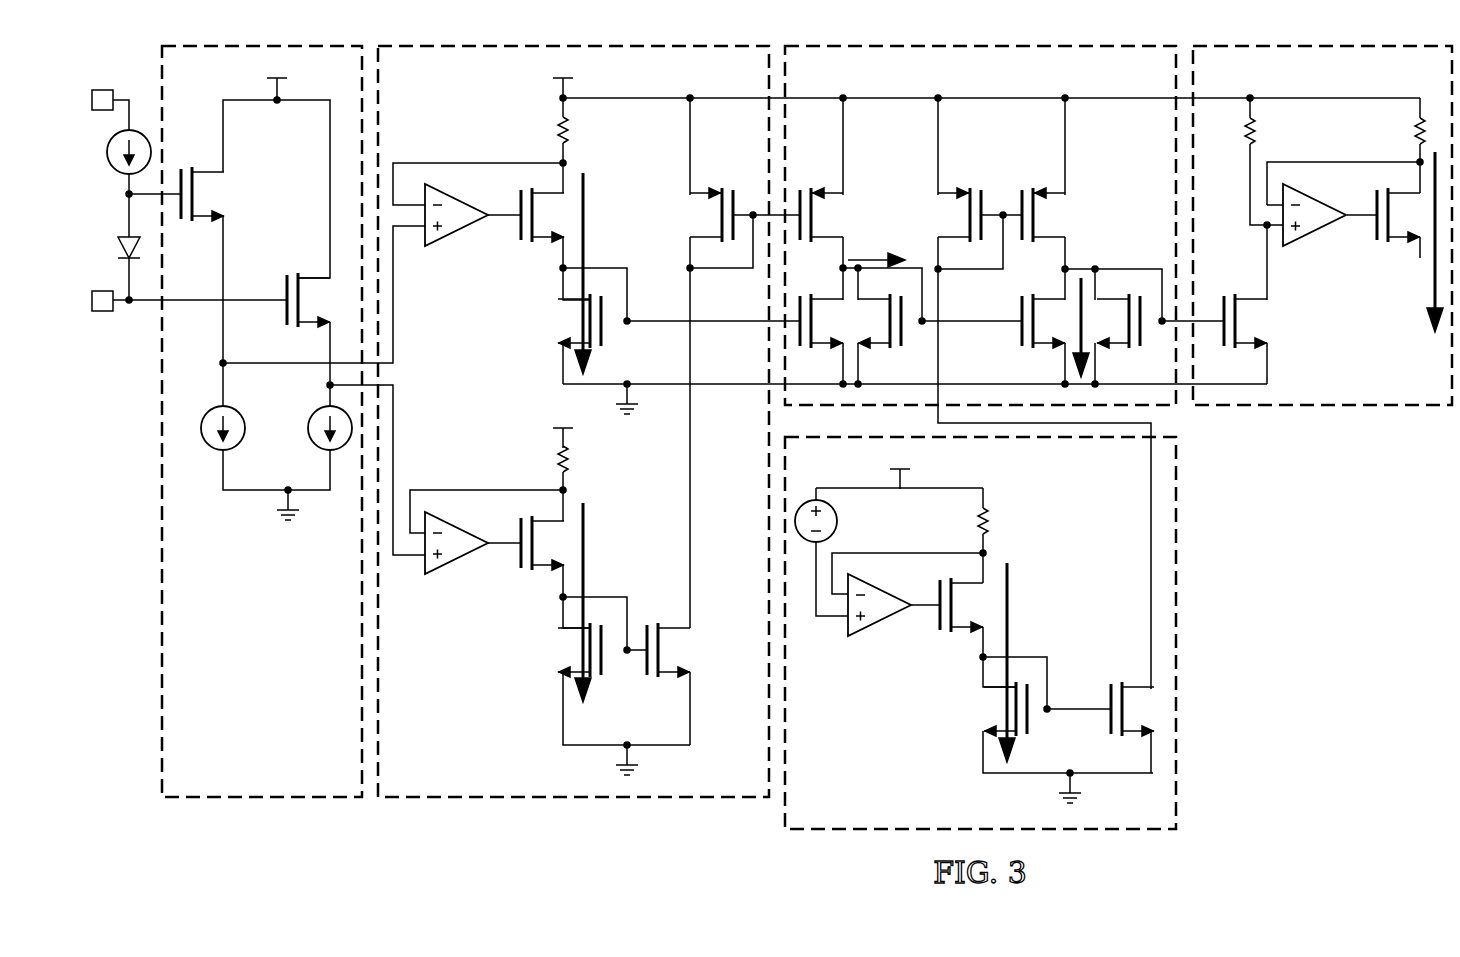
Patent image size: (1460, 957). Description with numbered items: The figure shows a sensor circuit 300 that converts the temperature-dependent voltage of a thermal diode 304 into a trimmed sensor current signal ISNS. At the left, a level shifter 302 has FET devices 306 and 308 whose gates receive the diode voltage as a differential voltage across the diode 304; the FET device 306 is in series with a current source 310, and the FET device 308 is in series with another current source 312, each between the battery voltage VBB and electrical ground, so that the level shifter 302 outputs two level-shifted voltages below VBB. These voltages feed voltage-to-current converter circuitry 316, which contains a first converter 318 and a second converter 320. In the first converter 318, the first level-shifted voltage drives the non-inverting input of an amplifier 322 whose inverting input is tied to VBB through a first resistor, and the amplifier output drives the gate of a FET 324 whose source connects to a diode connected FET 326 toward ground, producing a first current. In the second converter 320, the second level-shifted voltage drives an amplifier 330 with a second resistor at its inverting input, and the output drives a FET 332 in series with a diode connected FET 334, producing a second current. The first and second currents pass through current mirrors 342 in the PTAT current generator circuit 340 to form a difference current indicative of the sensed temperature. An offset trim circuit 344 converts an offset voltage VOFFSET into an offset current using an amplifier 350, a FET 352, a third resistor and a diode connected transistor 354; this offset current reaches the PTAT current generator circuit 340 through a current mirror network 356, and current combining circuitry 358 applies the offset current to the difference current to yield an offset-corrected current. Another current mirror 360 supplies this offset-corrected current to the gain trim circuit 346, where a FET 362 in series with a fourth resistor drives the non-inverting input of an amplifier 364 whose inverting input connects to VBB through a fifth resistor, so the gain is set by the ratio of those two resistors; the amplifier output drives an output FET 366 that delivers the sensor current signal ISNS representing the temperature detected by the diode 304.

The sensor circuit 300 is at (1287, 756).
The level shifter 302 is at (245, 801).
The thermal diode 304 is at (125, 234).
The FET device 306 is at (181, 169).
The FET device 308 is at (284, 274).
The current source 310 is at (243, 442).
The current source 312 is at (311, 418).
The voltage-to-current converter circuitry 316 is at (533, 801).
The first converter 318 is at (444, 130).
The second converter 320 is at (444, 462).
The amplifier 322 is at (458, 236).
The FET 324 is at (517, 200).
The diode connected FET 326 is at (608, 340).
The amplifier 330 is at (458, 564).
The FET 332 is at (517, 528).
The diode connected FET 334 is at (606, 680).
The PTAT current generator circuit 340 is at (960, 87).
The current mirrors 342 is at (797, 166).
The offset trim circuit 344 is at (1180, 649).
The gain trim circuit 346 is at (1300, 87).
The amplifier 350 is at (880, 626).
The FET 352 is at (938, 590).
The diode connected transistor 354 is at (1032, 730).
The current mirror network 356 is at (1012, 172).
The current combining circuitry 358 is at (1110, 222).
The current mirror 360 is at (1137, 366).
The FET 362 is at (1222, 296).
The amplifier 364 is at (1313, 236).
The output FET 366 is at (1374, 198).